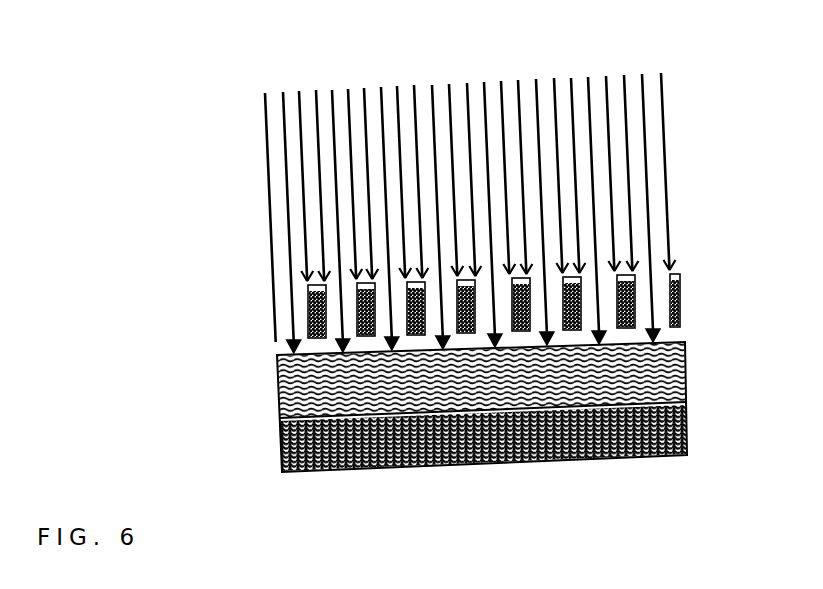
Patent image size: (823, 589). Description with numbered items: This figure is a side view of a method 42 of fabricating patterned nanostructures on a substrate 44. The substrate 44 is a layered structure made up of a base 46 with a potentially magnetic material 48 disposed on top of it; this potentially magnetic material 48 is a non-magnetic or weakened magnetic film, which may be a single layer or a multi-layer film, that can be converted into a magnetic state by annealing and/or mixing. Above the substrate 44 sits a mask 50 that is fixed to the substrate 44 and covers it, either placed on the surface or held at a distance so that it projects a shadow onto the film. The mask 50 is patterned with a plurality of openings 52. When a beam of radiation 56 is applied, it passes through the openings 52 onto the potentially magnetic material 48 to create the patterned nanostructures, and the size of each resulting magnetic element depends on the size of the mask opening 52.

The method 42 is at (148, 82).
The substrate 44 is at (259, 362).
The base 46 is at (687, 430).
The potentially magnetic material 48 is at (685, 382).
The mask 50 is at (681, 292).
The openings 52 is at (668, 272).
The beam of radiation 56 is at (662, 107).